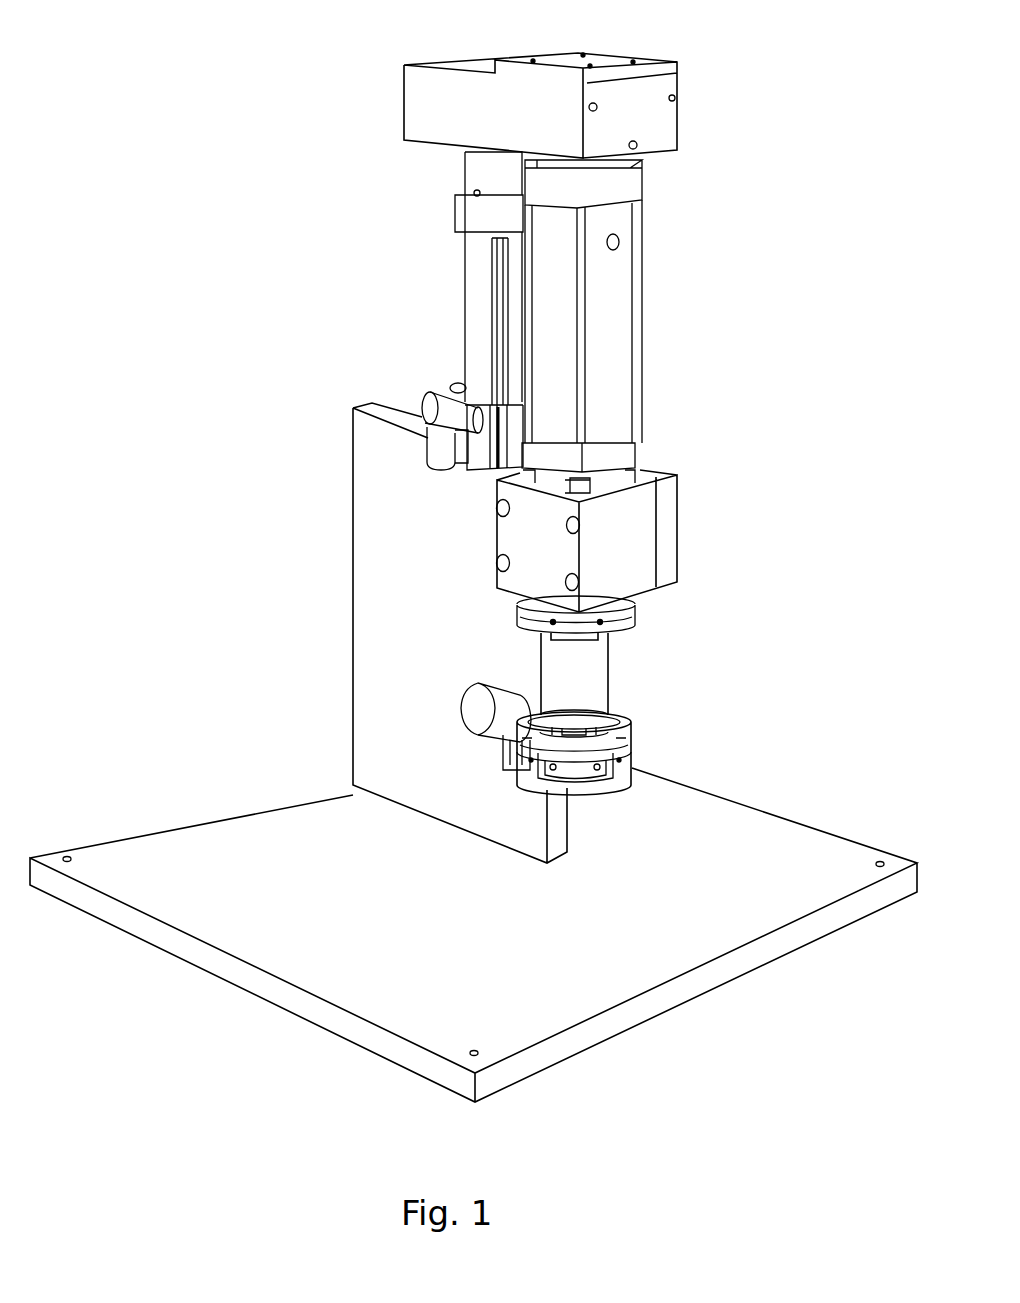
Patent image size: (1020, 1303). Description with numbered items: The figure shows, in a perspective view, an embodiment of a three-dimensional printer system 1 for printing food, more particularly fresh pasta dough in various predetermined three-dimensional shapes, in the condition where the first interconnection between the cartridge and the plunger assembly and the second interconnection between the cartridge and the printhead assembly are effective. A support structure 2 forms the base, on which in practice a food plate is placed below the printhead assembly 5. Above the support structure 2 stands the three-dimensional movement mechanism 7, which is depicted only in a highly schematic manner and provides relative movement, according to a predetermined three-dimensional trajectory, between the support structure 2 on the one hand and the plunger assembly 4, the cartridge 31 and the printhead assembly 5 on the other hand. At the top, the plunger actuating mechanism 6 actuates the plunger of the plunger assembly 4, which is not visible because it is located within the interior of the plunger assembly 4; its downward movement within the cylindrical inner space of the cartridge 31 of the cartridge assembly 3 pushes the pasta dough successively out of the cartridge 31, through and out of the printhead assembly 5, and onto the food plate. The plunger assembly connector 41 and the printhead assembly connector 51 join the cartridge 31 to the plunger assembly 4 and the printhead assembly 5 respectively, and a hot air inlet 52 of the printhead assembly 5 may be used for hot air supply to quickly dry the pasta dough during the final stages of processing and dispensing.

The 3D printer system 1 is at (273, 143).
The support structure 2 is at (157, 847).
The cartridge assembly 3 is at (668, 679).
The plunger assembly 4 is at (742, 472).
The printhead assembly 5 is at (530, 709).
The plunger actuating mechanism 6 is at (742, 62).
The 3D movement mechanism 7 is at (381, 483).
The cartridge 31 is at (614, 672).
The plunger assembly connector 41 is at (640, 617).
The printhead assembly connector 51 is at (634, 732).
The hot air inlet 52 is at (452, 702).